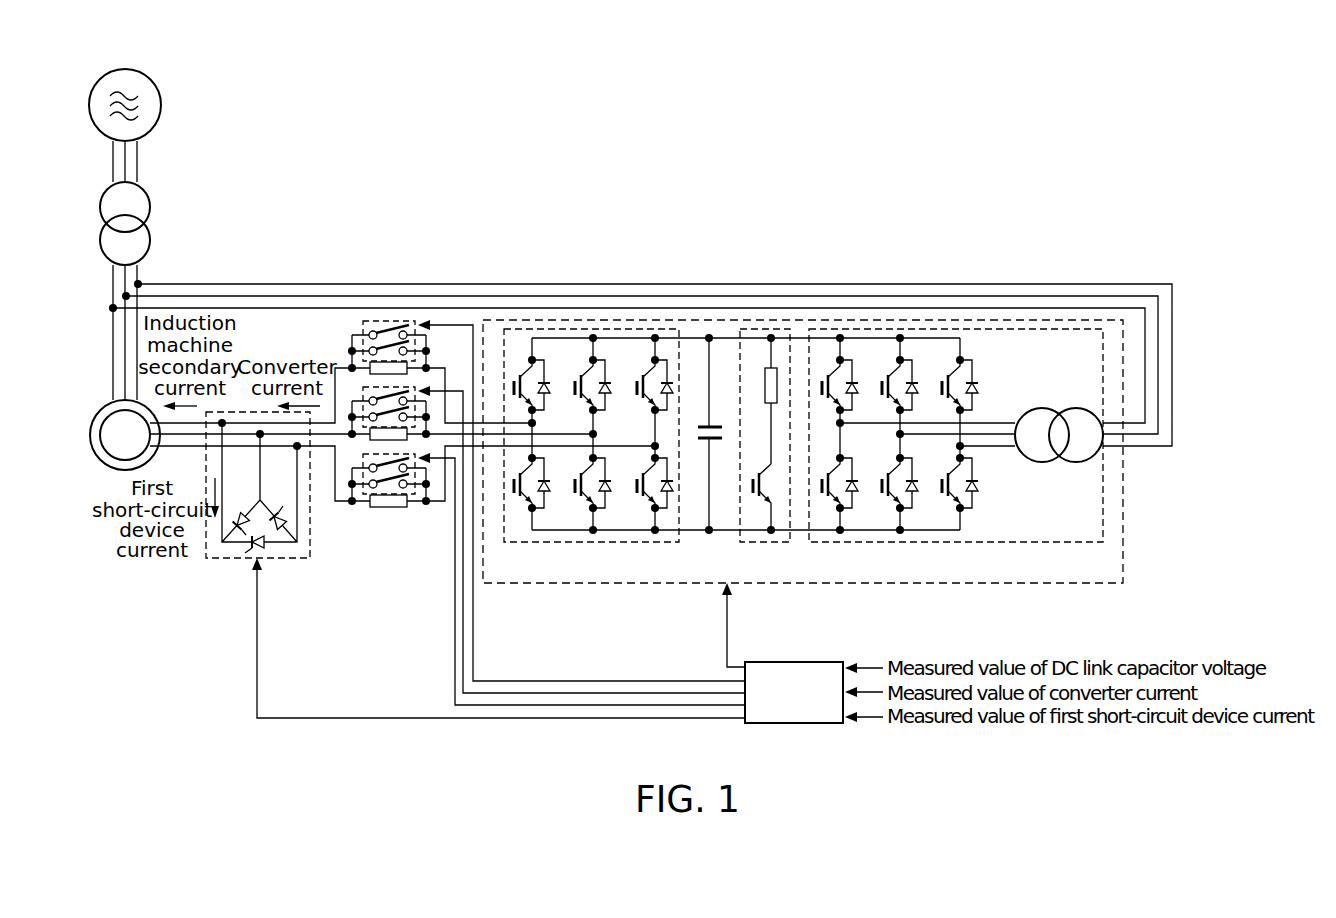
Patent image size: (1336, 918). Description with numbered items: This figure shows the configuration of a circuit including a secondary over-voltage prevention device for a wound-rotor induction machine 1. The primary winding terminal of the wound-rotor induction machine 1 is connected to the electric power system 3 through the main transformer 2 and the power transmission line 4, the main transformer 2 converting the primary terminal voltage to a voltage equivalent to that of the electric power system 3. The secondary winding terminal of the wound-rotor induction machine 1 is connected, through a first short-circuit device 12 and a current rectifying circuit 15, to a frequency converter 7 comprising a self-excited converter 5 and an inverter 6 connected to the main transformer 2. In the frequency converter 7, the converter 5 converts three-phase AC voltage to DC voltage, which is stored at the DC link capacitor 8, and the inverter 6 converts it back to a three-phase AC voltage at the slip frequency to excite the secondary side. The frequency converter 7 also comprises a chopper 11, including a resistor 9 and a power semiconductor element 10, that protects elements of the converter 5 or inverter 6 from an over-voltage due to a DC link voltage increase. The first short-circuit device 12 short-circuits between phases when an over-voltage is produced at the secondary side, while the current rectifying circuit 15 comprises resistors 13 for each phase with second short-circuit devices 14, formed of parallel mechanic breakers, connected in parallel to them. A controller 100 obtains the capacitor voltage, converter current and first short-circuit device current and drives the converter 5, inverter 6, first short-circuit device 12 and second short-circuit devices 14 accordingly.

The wound-rotor induction machine 1 is at (107, 402).
The main transformer 2 is at (150, 207).
The electric power system 3 is at (162, 108).
The power transmission line 4 is at (140, 160).
The converter 5 is at (922, 545).
The inverter 6 is at (512, 544).
The frequency converter 7 is at (803, 475).
The DC link capacitor 8 is at (706, 422).
The resistor 9 is at (764, 383).
The power semiconductor element 10 is at (760, 470).
The chopper 11 is at (765, 456).
The first short-circuit device 12 is at (236, 560).
The resistor 13 is at (366, 374).
The second short-circuit device 14 is at (363, 322).
The current rectifying circuit 15 is at (392, 470).
The controller 100 is at (804, 662).